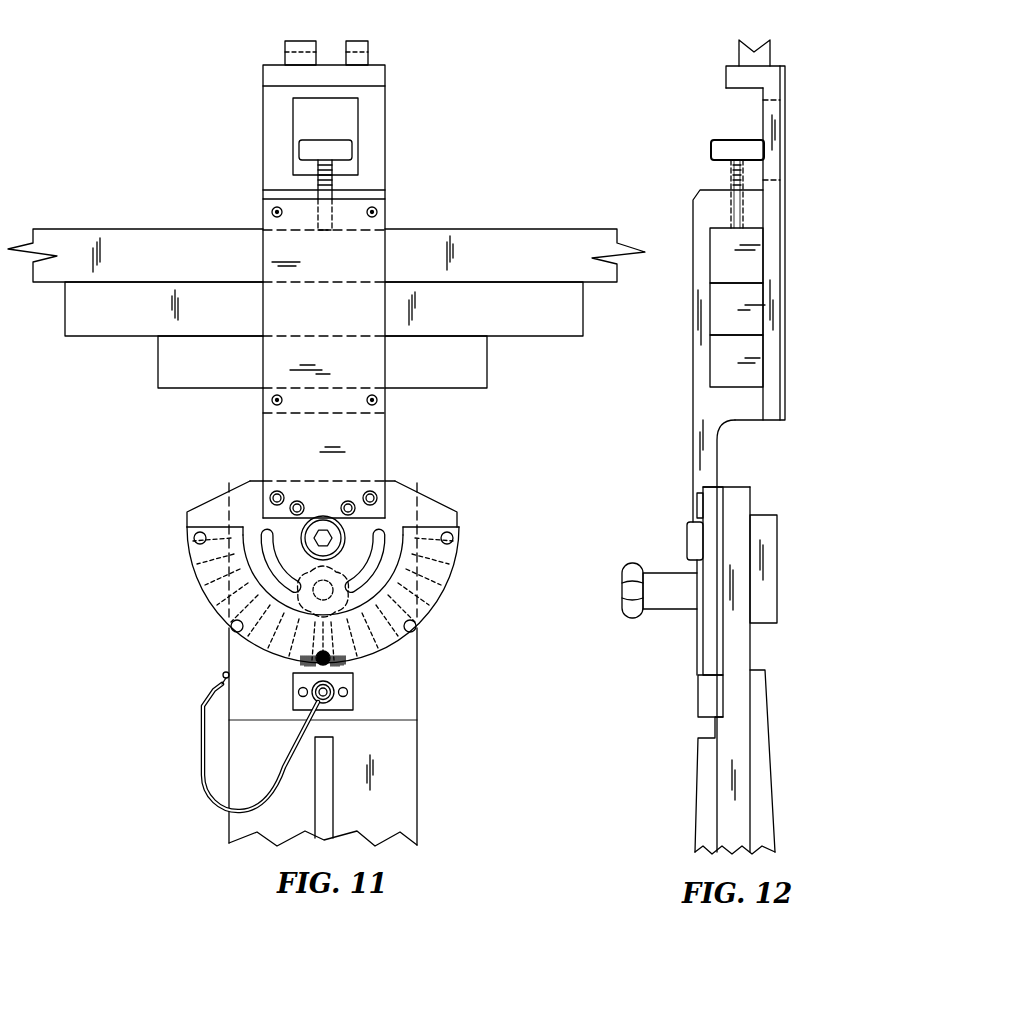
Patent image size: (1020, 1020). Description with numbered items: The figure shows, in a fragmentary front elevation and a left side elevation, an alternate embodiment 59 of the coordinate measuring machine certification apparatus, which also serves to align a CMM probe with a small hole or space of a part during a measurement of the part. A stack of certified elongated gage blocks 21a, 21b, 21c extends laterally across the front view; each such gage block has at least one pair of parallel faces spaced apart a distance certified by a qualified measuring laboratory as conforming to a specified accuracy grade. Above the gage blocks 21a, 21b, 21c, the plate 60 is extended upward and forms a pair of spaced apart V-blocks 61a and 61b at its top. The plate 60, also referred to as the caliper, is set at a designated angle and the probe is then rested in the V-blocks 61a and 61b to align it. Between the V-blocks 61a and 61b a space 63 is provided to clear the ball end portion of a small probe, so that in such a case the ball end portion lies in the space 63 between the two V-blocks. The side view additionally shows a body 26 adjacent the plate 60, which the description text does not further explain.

In FIG. 11, the angle gauge assembly 59 is at (150, 832).
In FIG. 12, the angle gauge assembly 59 is at (632, 833).
In FIG. 11, the stop block 60 is at (269, 123).
In FIG. 12, the stop block 60 is at (785, 275).
In FIG. 11, the first post 61a is at (286, 40).
In FIG. 11, the second post 61b is at (368, 42).
In FIG. 12, the second post 61b is at (770, 50).
In FIG. 11, the gap between posts 63 is at (330, 46).
In FIG. 11, the upper table board 21a is at (427, 229).
In FIG. 11, the middle table board 21b is at (478, 282).
In FIG. 11, the lower table board 21c is at (430, 336).
In FIG. 12, the fence body 26 is at (693, 383).